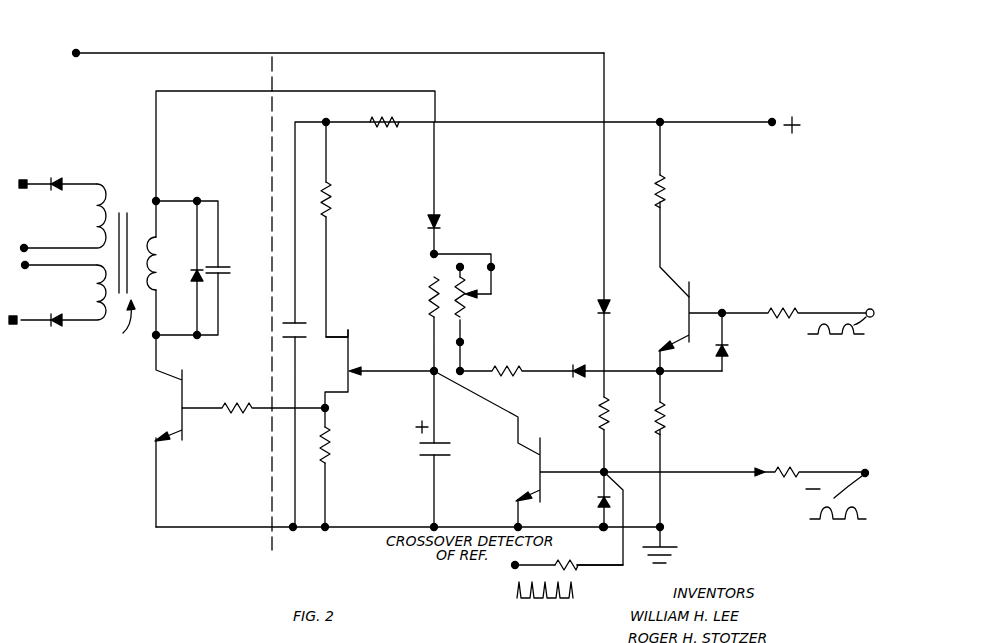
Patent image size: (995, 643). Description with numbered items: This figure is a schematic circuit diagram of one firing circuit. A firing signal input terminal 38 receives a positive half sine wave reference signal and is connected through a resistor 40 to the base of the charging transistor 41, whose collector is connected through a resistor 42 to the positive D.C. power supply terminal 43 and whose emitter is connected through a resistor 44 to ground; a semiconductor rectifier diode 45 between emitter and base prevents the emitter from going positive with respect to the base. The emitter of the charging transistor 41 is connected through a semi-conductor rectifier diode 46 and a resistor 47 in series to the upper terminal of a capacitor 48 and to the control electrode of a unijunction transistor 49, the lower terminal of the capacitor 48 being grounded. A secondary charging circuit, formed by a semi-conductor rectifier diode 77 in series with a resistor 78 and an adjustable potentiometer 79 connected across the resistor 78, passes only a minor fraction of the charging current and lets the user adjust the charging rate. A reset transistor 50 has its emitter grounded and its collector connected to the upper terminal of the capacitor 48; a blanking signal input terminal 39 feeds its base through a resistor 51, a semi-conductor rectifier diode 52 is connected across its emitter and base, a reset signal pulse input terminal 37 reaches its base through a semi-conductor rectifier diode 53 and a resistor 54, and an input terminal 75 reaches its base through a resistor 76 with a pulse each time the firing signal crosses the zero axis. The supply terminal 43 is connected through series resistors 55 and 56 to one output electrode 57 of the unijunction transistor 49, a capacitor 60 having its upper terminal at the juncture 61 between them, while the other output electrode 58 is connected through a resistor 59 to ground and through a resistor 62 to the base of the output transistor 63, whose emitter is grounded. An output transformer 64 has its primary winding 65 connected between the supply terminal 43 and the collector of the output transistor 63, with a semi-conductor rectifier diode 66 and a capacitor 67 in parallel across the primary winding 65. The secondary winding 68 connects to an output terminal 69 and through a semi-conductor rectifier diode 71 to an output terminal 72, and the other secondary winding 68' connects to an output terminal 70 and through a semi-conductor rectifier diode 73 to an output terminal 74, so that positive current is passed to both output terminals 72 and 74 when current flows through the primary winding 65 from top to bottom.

The reset signal pulse input terminal 37 is at (79, 51).
The capacitor 60 is at (307, 355).
The juncture 61 is at (326, 119).
The resistor 55 is at (390, 125).
The resistor 56 is at (331, 198).
The output electrode 57 is at (330, 335).
The output electrode 58 is at (330, 400).
The resistor 59 is at (330, 445).
The unijunction transistor 49 is at (349, 358).
The resistor 62 is at (243, 402).
The output transistor 63 is at (177, 395).
The output terminal 72 is at (30, 168).
The semi-conductor rectifier diode 71 is at (58, 178).
The secondary winding 68 is at (81, 216).
The output terminal 69 is at (24, 245).
The output terminal 70 is at (22, 268).
The secondary winding 68' is at (84, 292).
The semi-conductor rectifier diode 73 is at (54, 328).
The output terminal 74 is at (23, 306).
The output transformer 64 is at (117, 278).
The primary winding 65 is at (157, 250).
The semi-conductor rectifier diode 66 is at (191, 277).
The capacitor 67 is at (230, 270).
The semi-conductor rectifier diode 77 is at (440, 222).
The resistor 78 is at (429, 300).
The adjustable potentiometer 79 is at (466, 300).
The resistor 47 is at (508, 366).
The semi-conductor rectifier diode 46 is at (576, 366).
The capacitor 48 is at (450, 449).
The reset transistor 50 is at (541, 460).
The semi-conductor rectifier diode 53 is at (608, 304).
The resistor 54 is at (609, 414).
The semi-conductor rectifier diode 52 is at (598, 500).
The resistor 44 is at (665, 414).
The semiconductor rectifier diode 45 is at (728, 347).
The charging transistor 41 is at (691, 298).
The resistor 42 is at (665, 188).
The positive D.C. power supply terminal 43 is at (770, 118).
The resistor 40 is at (790, 300).
The firing signal input terminal 38 is at (871, 308).
The resistor 51 is at (762, 480).
The blanking signal input terminal 39 is at (866, 469).
The input terminal 75 is at (529, 580).
The resistor 76 is at (577, 568).